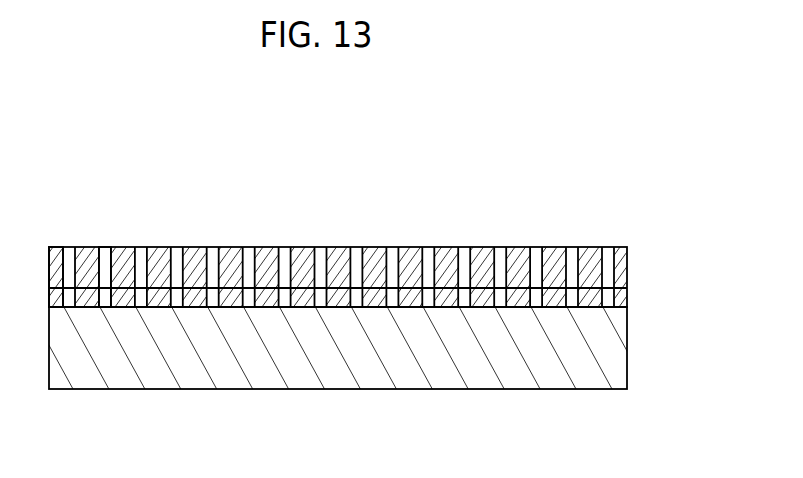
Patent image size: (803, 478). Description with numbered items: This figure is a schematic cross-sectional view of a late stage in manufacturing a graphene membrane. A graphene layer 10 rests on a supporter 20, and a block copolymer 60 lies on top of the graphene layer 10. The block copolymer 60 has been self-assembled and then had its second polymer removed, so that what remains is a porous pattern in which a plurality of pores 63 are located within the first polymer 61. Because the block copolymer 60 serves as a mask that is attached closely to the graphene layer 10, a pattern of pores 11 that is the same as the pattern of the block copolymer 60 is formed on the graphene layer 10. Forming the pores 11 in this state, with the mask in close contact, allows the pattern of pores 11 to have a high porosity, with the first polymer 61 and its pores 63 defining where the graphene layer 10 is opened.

The graphene layer 10 is at (625, 297).
The pores 11 is at (176, 324).
The supporter 20 is at (625, 348).
The block copolymer 60 is at (615, 192).
The first polymer 61 is at (58, 247).
The pores 63 is at (105, 247).